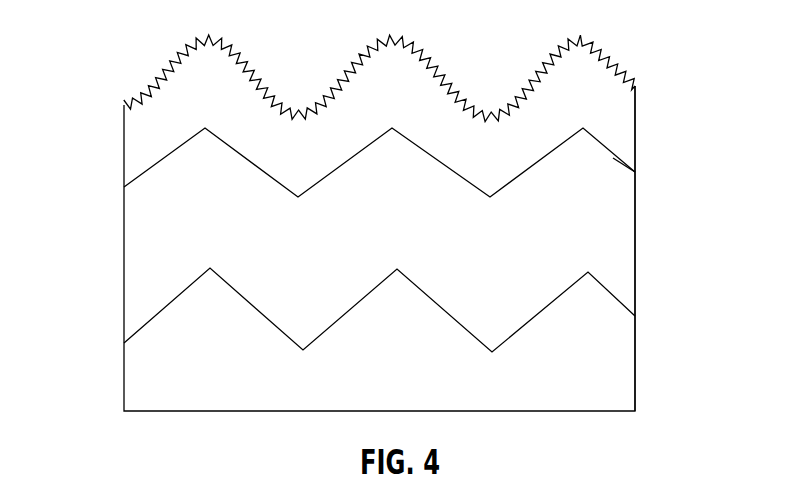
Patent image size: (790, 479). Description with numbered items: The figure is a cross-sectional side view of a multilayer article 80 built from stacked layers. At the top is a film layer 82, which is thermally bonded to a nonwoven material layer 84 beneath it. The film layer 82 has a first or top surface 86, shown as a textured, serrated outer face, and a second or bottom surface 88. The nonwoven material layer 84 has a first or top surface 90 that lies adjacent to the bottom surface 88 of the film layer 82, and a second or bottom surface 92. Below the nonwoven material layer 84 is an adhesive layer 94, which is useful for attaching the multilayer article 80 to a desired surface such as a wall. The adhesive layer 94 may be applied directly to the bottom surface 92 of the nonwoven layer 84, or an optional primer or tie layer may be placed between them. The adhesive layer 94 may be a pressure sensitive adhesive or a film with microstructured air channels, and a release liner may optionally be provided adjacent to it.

The multilayer article 80 is at (98, 115).
The film layer 82 is at (622, 133).
The nonwoven material layer 84 is at (622, 260).
The top surface 86 is at (598, 53).
The bottom surface 88 is at (613, 158).
The top surface 90 is at (137, 178).
The bottom surface 92 is at (140, 328).
The adhesive layer 94 is at (622, 367).